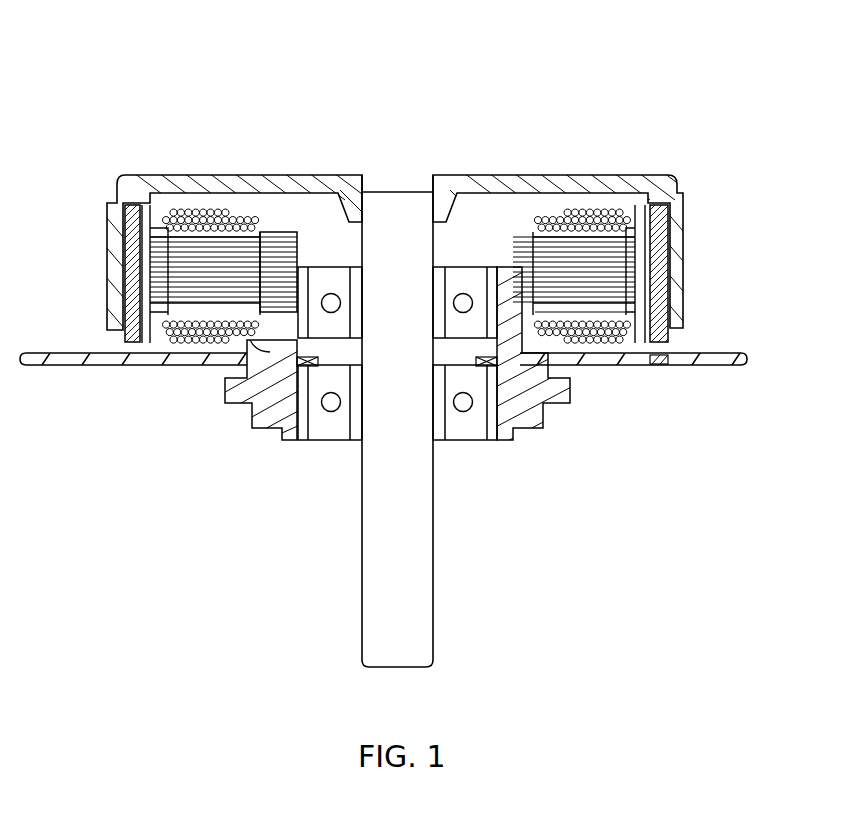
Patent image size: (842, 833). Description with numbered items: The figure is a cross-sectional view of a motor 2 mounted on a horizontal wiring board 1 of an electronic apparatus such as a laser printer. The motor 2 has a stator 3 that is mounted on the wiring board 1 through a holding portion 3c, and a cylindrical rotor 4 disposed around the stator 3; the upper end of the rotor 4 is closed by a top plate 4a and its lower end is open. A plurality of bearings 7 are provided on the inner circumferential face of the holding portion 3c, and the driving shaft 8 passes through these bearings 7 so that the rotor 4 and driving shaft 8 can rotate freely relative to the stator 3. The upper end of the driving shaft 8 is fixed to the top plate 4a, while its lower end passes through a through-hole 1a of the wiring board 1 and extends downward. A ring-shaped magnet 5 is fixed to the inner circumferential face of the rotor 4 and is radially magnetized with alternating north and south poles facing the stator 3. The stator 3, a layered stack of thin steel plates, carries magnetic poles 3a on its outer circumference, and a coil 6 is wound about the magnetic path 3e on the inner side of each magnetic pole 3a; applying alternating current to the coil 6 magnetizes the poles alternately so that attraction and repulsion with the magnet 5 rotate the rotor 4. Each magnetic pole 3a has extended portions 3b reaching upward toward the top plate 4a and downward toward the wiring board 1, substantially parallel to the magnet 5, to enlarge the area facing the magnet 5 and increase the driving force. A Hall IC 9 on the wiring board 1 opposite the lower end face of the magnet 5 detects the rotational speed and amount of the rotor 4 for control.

The wiring board 1 is at (728, 353).
The through-hole 1a is at (240, 360).
The motor 2 is at (239, 92).
The stator 3 is at (557, 300).
The magnetic pole 3a is at (150, 281).
The extended portion 3b is at (152, 204).
The holding portion 3c is at (515, 388).
The magnetic path 3e is at (588, 272).
The rotor 4 is at (683, 256).
The top plate 4a is at (512, 186).
The magnet 5 is at (668, 222).
The coil 6 is at (570, 215).
The bearing 7 is at (332, 266).
The driving shaft 8 is at (397, 192).
The Hall IC 9 is at (660, 364).